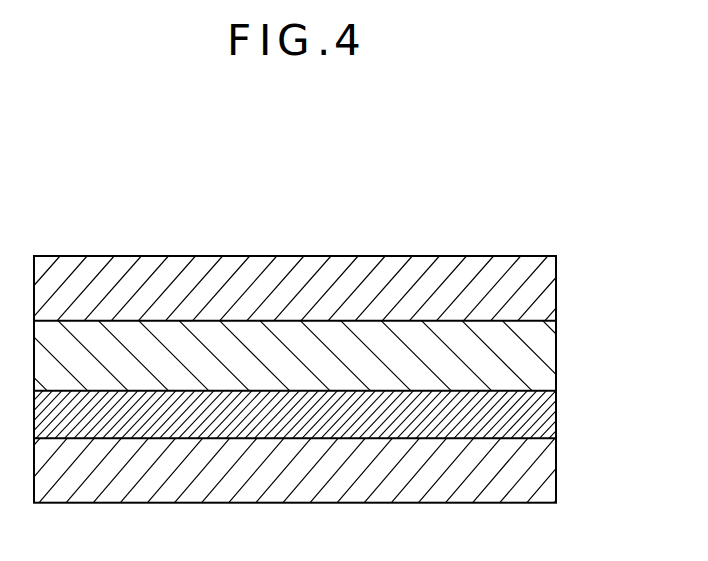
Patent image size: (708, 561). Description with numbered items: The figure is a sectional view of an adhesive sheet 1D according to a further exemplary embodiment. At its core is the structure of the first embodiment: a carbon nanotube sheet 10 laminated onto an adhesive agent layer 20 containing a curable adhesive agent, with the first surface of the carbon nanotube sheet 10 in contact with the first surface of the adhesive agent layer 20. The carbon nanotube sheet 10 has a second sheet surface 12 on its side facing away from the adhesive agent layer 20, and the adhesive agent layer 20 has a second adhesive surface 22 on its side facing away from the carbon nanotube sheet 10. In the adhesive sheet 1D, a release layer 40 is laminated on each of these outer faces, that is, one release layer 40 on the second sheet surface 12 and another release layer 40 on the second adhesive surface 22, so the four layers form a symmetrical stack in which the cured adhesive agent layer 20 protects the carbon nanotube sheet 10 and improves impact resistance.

The adhesive sheet 1D is at (468, 163).
The release layer 40 is at (556, 273).
The second adhesive surface 22 is at (537, 321).
The adhesive agent layer 20 is at (556, 353).
The carbon nanotube sheet 10 is at (556, 410).
The second sheet surface 12 is at (532, 439).